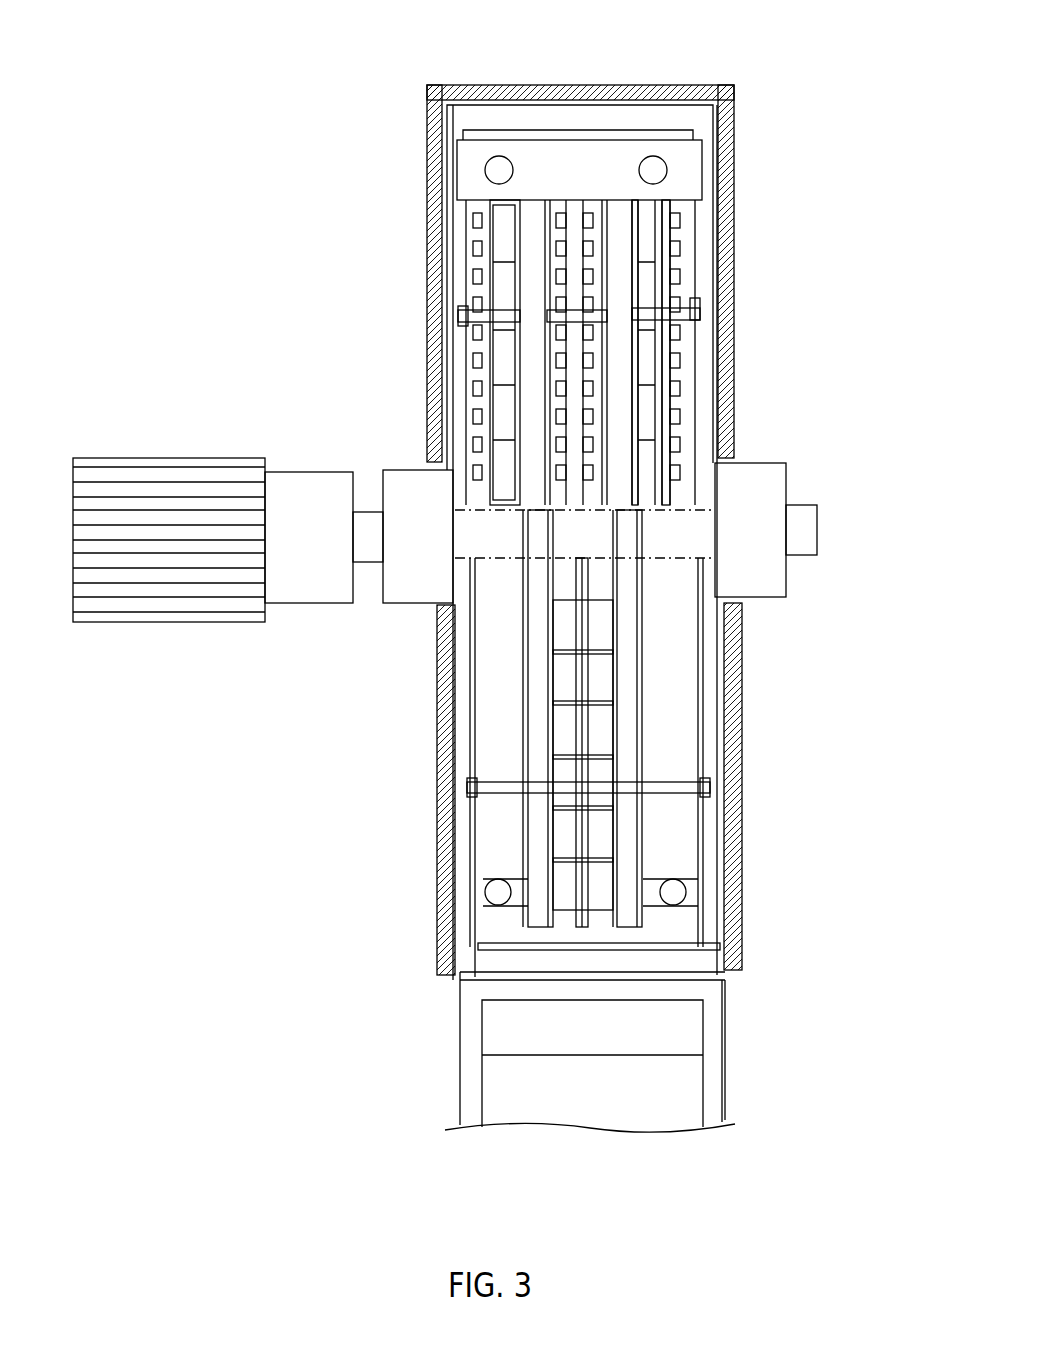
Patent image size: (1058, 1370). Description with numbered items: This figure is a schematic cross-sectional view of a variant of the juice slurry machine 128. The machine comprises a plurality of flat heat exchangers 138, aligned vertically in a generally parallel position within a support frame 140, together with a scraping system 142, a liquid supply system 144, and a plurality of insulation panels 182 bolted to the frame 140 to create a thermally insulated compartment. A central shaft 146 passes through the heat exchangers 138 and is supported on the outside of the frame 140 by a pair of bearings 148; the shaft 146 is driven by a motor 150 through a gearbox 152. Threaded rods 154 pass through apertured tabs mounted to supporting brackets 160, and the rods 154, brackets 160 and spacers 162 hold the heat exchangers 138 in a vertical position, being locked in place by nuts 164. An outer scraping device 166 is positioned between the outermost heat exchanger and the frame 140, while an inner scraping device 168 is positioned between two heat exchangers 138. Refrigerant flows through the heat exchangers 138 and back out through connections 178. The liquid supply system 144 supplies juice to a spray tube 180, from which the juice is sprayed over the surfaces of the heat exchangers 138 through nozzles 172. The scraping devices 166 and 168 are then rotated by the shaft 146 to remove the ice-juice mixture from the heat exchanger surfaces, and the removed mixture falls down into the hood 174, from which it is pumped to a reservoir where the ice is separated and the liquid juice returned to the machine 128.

The juice slurry machine 128 is at (388, 68).
The insulation panels 182 is at (595, 88).
The spacers 162 is at (490, 277).
The supporting brackets 160 is at (457, 300).
The nuts 164 is at (457, 320).
The spray tube 180 is at (577, 360).
The nozzles 172 is at (600, 278).
The outer scraping device 166 is at (677, 403).
The connections 178 is at (667, 172).
The liquid supply system 144 is at (673, 503).
The central shaft 146 is at (823, 548).
The bearings 148 is at (420, 580).
The scraping system 142 is at (288, 468).
The motor 150 is at (150, 600).
The gearbox 152 is at (295, 575).
The inner scraping device 168 is at (567, 743).
The support frame 140 is at (470, 883).
The flat heat exchangers 138 is at (530, 908).
The threaded rods 154 is at (617, 800).
The hood 174 is at (633, 1050).